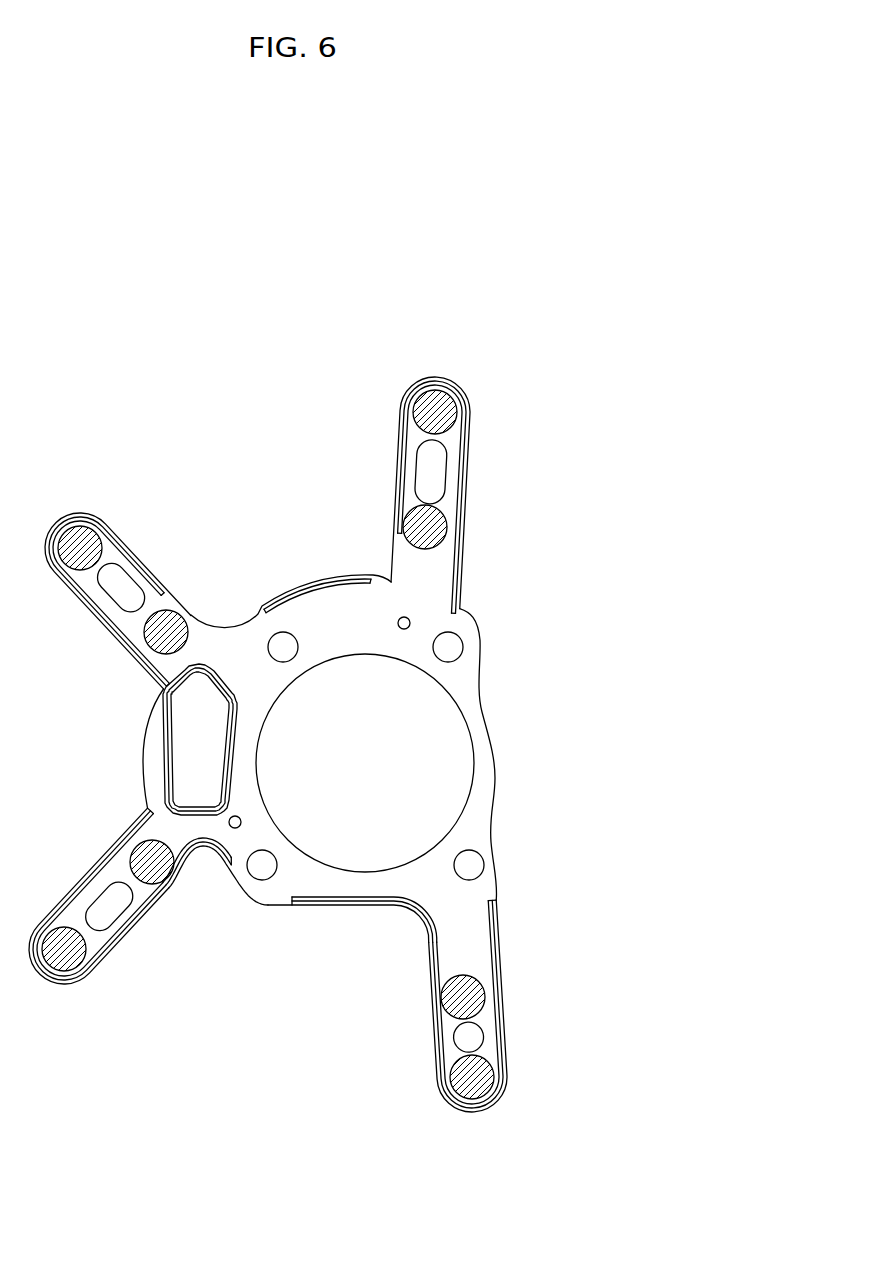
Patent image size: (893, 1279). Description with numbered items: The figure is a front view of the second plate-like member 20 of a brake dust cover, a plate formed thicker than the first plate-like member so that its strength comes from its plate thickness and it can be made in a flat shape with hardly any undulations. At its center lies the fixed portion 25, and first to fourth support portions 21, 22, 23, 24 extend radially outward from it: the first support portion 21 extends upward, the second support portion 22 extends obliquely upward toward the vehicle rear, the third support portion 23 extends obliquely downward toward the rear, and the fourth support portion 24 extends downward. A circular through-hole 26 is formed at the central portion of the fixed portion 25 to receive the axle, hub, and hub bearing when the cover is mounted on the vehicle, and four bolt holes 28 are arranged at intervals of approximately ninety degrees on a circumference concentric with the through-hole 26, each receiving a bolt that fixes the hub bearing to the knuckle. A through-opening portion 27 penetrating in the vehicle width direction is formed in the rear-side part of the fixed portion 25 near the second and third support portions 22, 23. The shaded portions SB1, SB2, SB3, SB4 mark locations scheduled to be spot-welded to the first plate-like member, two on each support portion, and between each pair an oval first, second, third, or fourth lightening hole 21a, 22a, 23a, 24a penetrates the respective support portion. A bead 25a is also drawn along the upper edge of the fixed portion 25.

The second plate-like member 20 is at (500, 597).
The first support portion 21 is at (452, 500).
The first lightening hole 21a is at (430, 471).
The second support portion 22 is at (133, 568).
The second lightening hole 22a is at (121, 588).
The third support portion 23 is at (130, 920).
The third lightening hole 23a is at (109, 906).
The fourth support portion 24 is at (481, 950).
The fourth lightening hole 24a is at (469, 1037).
The fixed portion 25 is at (462, 681).
The bead 25a is at (318, 582).
The through-hole 26 is at (455, 752).
The through-opening portion 27 is at (190, 732).
The bolt holes 28 is at (472, 862).
The spot-welding scheduled locations SB1 is at (437, 404).
The spot-welding scheduled locations SB2 is at (83, 540).
The spot-welding scheduled locations SB3 is at (178, 883).
The spot-welding scheduled locations SB4 is at (461, 998).